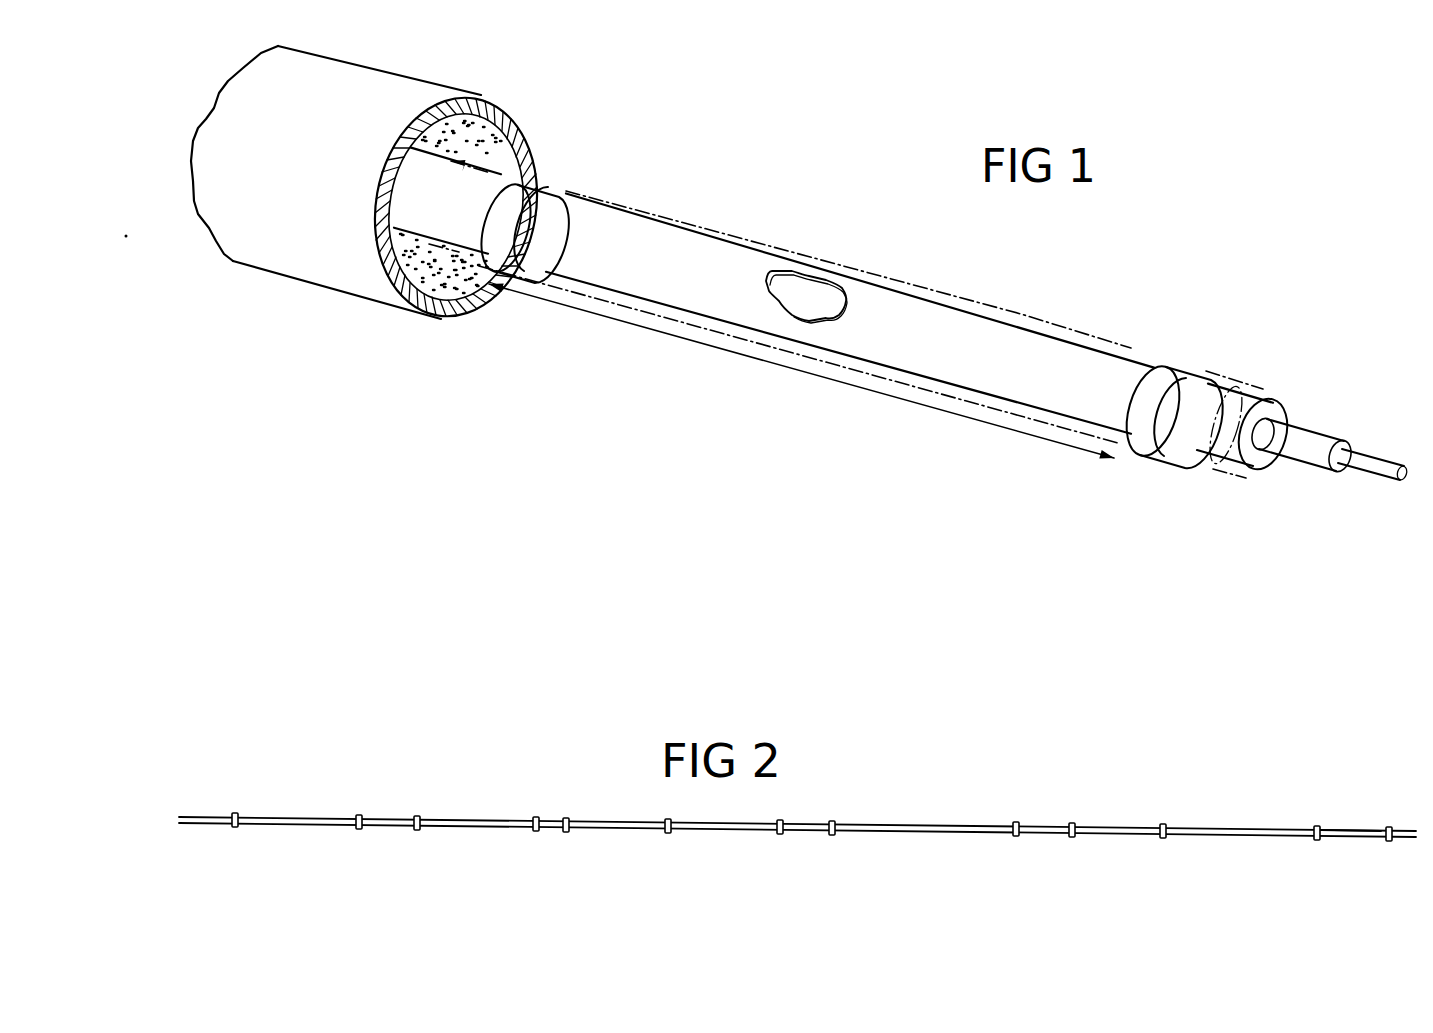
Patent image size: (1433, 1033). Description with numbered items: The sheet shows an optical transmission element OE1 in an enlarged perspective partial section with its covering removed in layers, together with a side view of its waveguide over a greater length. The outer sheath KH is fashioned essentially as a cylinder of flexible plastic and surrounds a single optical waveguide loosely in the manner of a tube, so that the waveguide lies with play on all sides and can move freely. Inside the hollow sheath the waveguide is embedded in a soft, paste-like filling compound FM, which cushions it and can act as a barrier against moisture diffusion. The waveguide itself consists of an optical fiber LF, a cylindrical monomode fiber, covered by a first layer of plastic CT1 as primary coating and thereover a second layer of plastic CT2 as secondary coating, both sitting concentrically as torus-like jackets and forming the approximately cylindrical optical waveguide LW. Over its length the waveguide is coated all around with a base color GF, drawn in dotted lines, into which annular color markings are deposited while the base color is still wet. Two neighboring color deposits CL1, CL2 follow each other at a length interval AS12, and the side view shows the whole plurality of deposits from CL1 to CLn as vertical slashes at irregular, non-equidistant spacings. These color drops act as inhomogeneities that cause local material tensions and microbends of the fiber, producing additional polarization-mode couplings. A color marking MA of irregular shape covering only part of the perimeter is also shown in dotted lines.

In FIG. 1, the optical transmission element OE1 is at (283, 295).
In FIG. 1, the outer sheath KH is at (453, 318).
In FIG. 1, the filling compound FM is at (490, 132).
In FIG. 1, the base color GF is at (1060, 337).
In FIG. 1, the length interval AS12 is at (765, 346).
In FIG. 1, the optical waveguide LW is at (1262, 390).
In FIG. 1, the color deposit CL1 is at (1173, 362).
In FIG. 2, the color deposit CL1 is at (232, 827).
In FIG. 1, the color deposit CL2 is at (545, 160).
In FIG. 2, the color deposit CL2 is at (330, 829).
In FIG. 1, the color marking of irregular shape MA is at (813, 288).
In FIG. 1, the first layer of plastic CT1 is at (1302, 436).
In FIG. 1, the second layer of plastic CT2 is at (1262, 470).
In FIG. 1, the optical fiber LF is at (1378, 460).
In FIG. 2, the color deposit CLn is at (1385, 840).